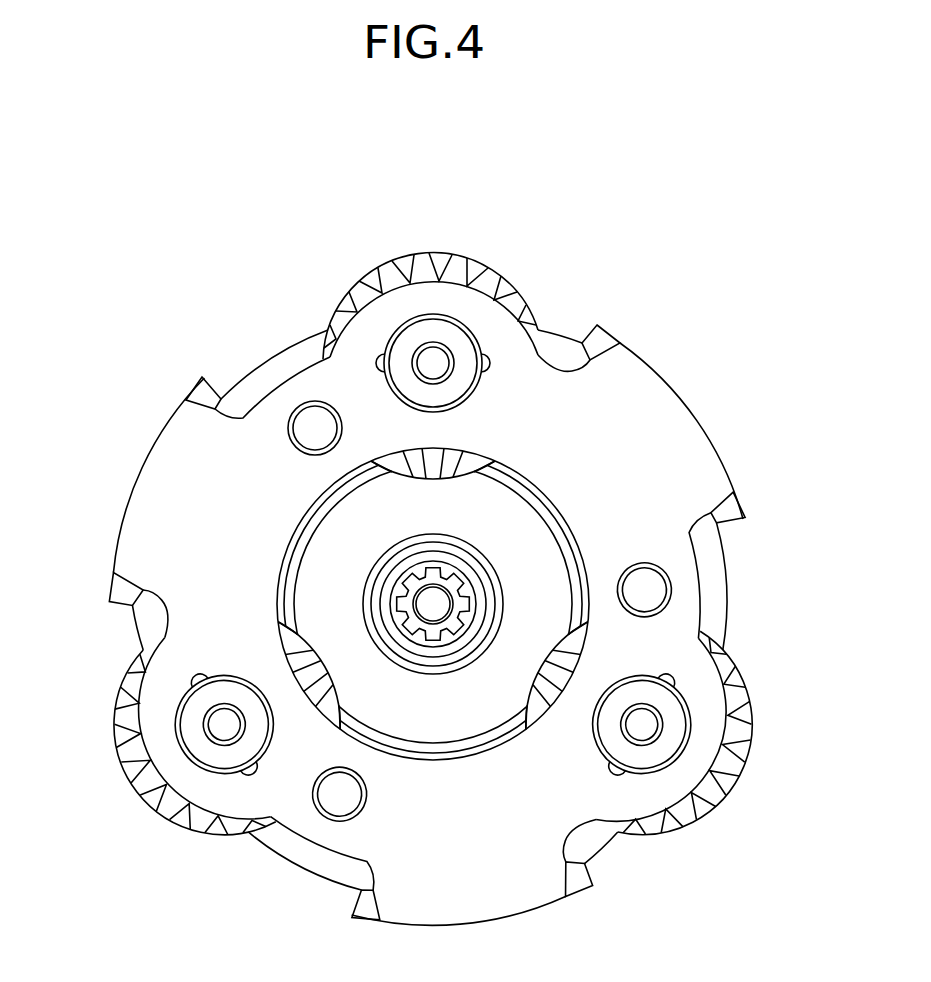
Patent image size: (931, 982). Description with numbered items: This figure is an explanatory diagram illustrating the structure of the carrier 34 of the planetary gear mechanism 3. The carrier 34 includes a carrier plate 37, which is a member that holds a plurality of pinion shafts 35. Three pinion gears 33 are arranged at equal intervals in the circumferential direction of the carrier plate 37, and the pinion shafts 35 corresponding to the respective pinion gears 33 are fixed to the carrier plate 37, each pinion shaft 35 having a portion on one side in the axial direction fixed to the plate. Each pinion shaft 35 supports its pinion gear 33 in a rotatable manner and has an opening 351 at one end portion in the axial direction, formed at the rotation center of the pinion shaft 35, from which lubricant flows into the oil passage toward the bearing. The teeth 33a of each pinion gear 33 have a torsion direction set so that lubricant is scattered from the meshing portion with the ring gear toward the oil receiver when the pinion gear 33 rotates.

The planetary gear mechanism 3 is at (657, 205).
The pinion gear 33 is at (470, 252).
The teeth 33a is at (512, 288).
The carrier 34 is at (640, 354).
The pinion shaft 35 is at (401, 357).
The opening 351 is at (431, 360).
The carrier plate 37 is at (617, 464).